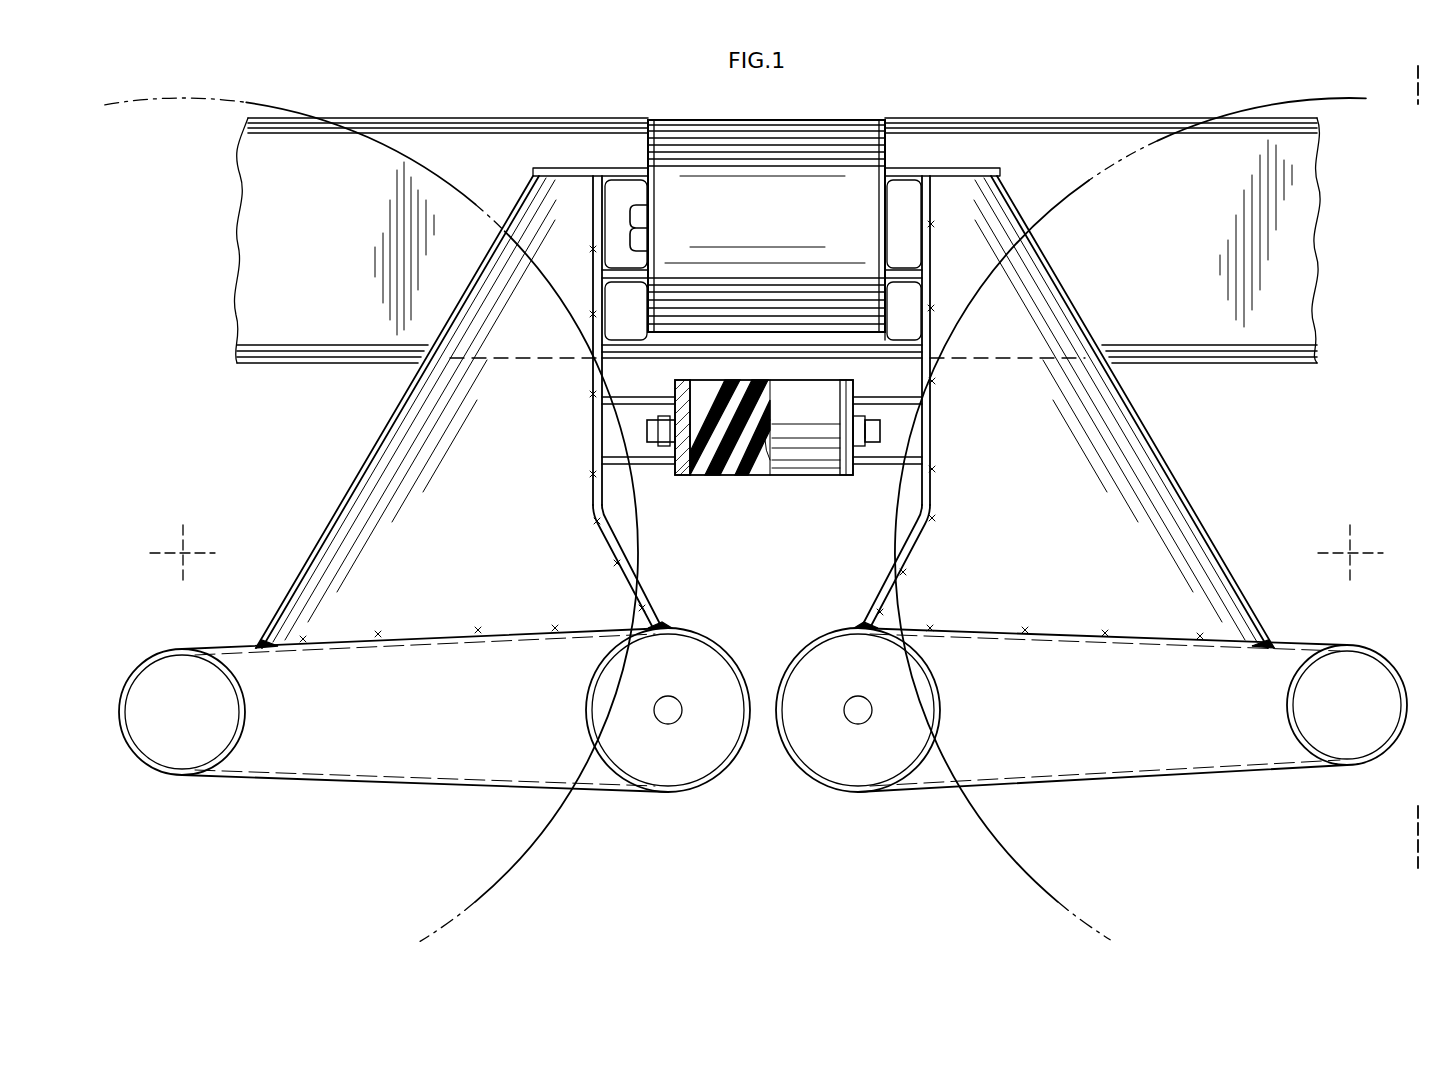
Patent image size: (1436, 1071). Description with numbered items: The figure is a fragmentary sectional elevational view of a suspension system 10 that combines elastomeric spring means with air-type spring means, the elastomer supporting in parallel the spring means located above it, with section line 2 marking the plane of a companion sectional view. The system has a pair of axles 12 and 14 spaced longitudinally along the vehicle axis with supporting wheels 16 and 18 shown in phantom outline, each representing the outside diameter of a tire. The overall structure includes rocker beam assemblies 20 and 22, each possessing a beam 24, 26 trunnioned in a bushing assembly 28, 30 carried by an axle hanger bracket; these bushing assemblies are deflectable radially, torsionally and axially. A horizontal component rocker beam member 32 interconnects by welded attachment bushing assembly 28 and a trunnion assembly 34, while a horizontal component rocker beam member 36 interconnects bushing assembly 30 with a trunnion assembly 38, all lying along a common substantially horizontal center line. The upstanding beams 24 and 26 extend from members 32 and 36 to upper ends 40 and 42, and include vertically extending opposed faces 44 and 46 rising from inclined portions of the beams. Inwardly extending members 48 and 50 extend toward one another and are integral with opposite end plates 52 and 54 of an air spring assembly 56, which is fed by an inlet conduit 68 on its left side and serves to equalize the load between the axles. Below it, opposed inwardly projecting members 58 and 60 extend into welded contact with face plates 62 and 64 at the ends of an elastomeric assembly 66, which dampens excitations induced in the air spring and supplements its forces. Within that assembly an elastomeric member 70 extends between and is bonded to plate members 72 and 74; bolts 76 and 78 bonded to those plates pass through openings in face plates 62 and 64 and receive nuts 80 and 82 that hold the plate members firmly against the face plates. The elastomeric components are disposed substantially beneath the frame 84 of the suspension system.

The suspension system 10 is at (671, 100).
The axle 12 is at (1350, 553).
The axle 14 is at (183, 553).
The supporting wheel 16 is at (1265, 105).
The supporting wheel 18 is at (290, 105).
The rocker beam assembly 20 is at (1193, 460).
The rocker beam assembly 22 is at (365, 431).
The beam 24 is at (1033, 527).
The beam 26 is at (530, 525).
The bushing assembly 28 is at (1378, 639).
The bushing assembly 30 is at (158, 650).
The horizontal component rocker beam member 32 is at (1118, 778).
The trunnion assembly 34 is at (853, 814).
The horizontal component rocker beam member 36 is at (483, 645).
The trunnion assembly 38 is at (672, 812).
The upper end 40 is at (965, 172).
The upper end 42 is at (567, 172).
The face 44 is at (893, 548).
The face 46 is at (625, 528).
The inwardly extending member 48 is at (905, 172).
The inwardly extending member 50 is at (630, 172).
The end plate 52 is at (885, 300).
The end plate 54 is at (648, 302).
The air spring assembly 56 is at (778, 165).
The inwardly projecting member 58 is at (915, 460).
The inwardly projecting member 60 is at (645, 470).
The face plate 62 is at (853, 466).
The face plate 64 is at (680, 478).
The elastomeric assembly 66 is at (799, 500).
The inlet conduit 68 is at (645, 212).
The elastomeric member 70 is at (735, 468).
The plate member 72 is at (850, 382).
The plate member 74 is at (680, 382).
The bolt 76 is at (880, 432).
The bolt 78 is at (650, 433).
The nut 80 is at (862, 424).
The nut 82 is at (660, 422).
The frame 84 is at (968, 118).
The section line 2- 2 is at (1418, 80).